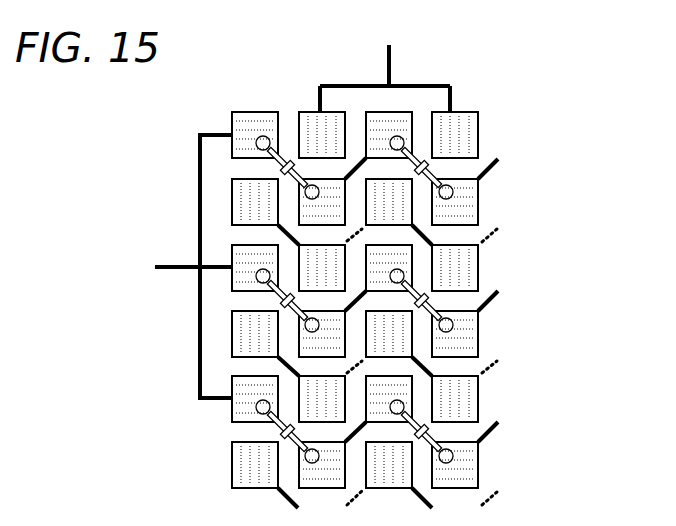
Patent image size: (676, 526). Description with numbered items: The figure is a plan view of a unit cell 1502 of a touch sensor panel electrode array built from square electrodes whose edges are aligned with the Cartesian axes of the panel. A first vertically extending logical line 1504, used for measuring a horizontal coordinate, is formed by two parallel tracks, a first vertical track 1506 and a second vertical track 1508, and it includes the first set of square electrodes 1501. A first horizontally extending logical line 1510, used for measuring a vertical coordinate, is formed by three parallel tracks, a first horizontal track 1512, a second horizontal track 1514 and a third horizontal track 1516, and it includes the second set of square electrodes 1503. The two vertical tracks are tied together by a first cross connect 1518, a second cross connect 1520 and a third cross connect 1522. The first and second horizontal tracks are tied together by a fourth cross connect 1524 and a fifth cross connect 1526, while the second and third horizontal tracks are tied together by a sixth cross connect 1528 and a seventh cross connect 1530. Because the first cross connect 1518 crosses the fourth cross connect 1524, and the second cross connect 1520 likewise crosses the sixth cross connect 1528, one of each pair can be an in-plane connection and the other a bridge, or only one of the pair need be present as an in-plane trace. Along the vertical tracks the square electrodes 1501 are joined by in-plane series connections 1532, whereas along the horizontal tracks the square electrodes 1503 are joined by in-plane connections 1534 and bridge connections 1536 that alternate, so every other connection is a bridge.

The first set of square electrodes 1501 is at (478, 133).
The unit cell 1502 is at (363, 49).
The second set of square electrodes 1503 is at (480, 200).
The first vertically extending logical line 1504 is at (389, 85).
The first vertical track 1506 is at (307, 113).
The second vertical track 1508 is at (455, 110).
The first horizontally extending logical line 1510 is at (197, 263).
The first horizontal track 1512 is at (218, 133).
The second horizontal track 1514 is at (222, 268).
The third horizontal track 1516 is at (213, 402).
The first cross connect 1518 is at (233, 196).
The second cross connect 1520 is at (218, 379).
The third cross connect 1522 is at (246, 500).
The fourth cross connect 1524 is at (307, 310).
The fifth cross connect 1526 is at (490, 237).
The sixth cross connect 1528 is at (200, 351).
The seventh cross connect 1530 is at (485, 360).
The in-plane series connections 1532 is at (433, 390).
The in-plane connections 1534 is at (320, 105).
The bridge connections 1536 is at (278, 160).